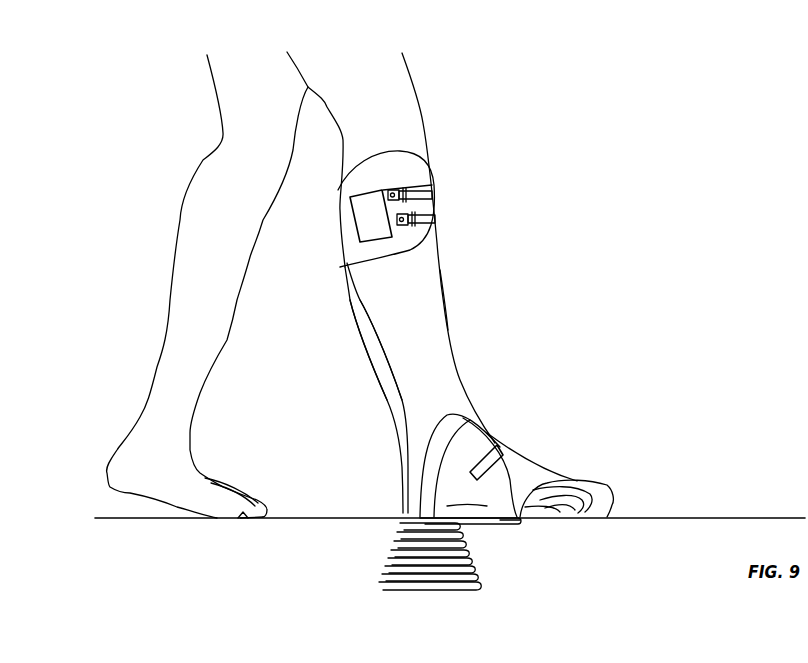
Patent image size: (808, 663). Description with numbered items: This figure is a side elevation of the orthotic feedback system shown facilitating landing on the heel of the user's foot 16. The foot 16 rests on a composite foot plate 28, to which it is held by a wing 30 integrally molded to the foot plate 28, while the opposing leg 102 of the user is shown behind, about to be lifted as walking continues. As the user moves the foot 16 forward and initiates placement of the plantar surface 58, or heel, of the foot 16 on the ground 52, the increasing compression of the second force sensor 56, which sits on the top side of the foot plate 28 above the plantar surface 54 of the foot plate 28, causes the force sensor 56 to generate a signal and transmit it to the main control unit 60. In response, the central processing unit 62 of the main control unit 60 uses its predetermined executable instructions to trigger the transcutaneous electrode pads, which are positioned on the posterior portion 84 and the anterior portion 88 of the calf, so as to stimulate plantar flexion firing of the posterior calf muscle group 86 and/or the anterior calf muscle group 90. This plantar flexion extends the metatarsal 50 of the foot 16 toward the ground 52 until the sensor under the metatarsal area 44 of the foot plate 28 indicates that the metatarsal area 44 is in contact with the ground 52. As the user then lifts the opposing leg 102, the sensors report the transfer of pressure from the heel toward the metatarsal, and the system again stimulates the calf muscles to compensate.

The opposing leg 102 is at (168, 243).
The foot 16 is at (544, 454).
The foot plate 28 is at (492, 523).
The wing 30 is at (366, 282).
The metatarsal area 44 is at (520, 497).
The metatarsal 50 is at (528, 519).
The ground 52 is at (703, 517).
The plantar surface of the foot plate 54 is at (487, 439).
The second force sensor 56 is at (470, 413).
The plantar surface of the foot 58 is at (400, 517).
The main control unit 60 is at (420, 160).
The central processing unit 62 is at (437, 244).
The posterior portion of the calf 84 is at (357, 330).
The posterior calf muscle group 86 is at (389, 331).
The anterior portion of the calf 88 is at (450, 330).
The anterior calf muscle group 90 is at (432, 308).